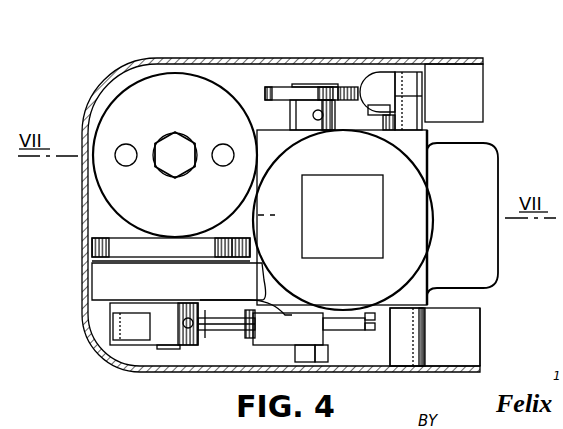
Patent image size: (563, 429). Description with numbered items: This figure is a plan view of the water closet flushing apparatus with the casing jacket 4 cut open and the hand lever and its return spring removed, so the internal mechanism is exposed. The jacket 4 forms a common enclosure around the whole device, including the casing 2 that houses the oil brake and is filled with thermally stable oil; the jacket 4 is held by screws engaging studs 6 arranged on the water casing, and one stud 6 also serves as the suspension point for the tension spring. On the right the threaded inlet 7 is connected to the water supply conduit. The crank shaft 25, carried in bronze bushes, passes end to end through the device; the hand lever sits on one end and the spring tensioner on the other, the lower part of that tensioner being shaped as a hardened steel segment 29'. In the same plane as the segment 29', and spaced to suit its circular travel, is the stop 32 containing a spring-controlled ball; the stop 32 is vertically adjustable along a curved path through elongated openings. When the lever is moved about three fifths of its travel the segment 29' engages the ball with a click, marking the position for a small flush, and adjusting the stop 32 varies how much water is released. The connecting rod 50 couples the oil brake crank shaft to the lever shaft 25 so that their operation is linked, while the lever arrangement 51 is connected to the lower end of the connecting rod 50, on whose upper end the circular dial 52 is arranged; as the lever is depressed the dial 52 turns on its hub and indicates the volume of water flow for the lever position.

The casing housing the oil brake 2 is at (166, 100).
The casing jacket 4 is at (292, 155).
The stud 6 is at (413, 79).
The threaded inlet 7 is at (483, 174).
The crank shaft 25 is at (301, 87).
The segment 29' is at (357, 68).
The stop 32 is at (379, 80).
The connecting rod 50 is at (218, 332).
The lever arrangement 51 is at (375, 317).
The circular dial 52 is at (98, 279).